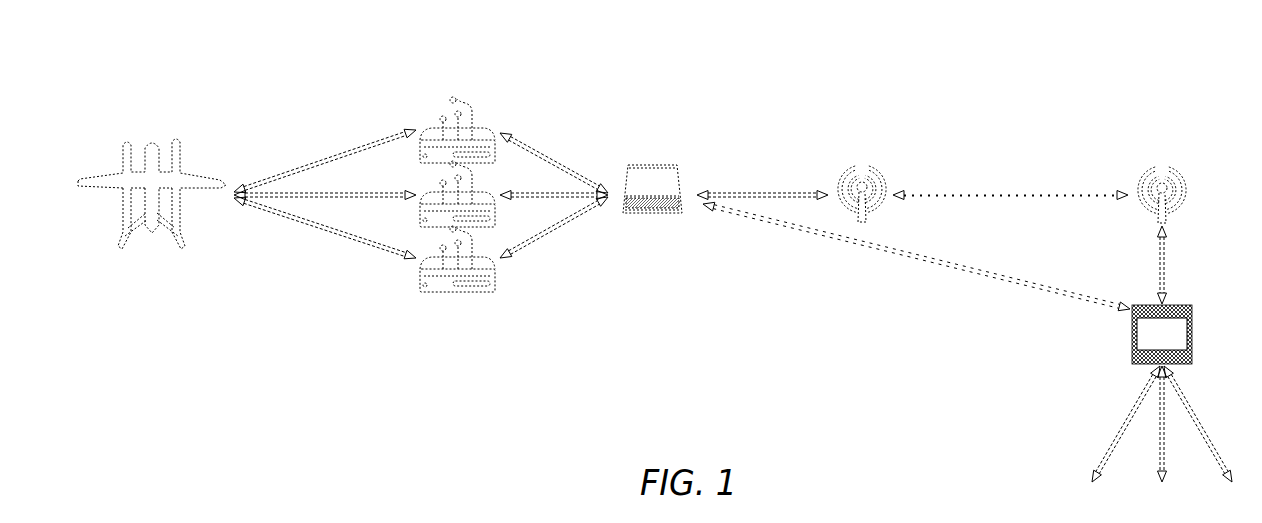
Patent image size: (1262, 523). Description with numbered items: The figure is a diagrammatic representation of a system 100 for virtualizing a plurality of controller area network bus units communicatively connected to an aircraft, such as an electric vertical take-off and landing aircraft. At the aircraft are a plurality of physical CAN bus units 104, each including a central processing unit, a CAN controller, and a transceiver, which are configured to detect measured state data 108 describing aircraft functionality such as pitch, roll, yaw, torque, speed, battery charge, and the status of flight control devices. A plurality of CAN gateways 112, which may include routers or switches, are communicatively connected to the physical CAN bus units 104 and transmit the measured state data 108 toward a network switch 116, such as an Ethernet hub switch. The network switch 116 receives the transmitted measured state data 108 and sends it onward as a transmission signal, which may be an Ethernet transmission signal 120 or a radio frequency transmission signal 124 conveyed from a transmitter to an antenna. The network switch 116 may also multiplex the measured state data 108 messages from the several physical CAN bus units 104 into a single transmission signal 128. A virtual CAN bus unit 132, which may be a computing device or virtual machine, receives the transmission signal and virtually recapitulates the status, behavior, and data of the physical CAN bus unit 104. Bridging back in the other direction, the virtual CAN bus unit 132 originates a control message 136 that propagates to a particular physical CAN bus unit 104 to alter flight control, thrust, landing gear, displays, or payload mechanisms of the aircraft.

The system 100 is at (358, 62).
The physical controller area network bus unit 104 is at (200, 162).
The measured state data 108 is at (322, 162).
The controller area network gateway 112 is at (475, 102).
The network switch 116 is at (651, 165).
The Ethernet transmission signal 120 is at (882, 208).
The radio frequency transmission signal 124 is at (1198, 184).
The single transmission signal 128 is at (745, 192).
The virtual controller area network bus unit 132 is at (1194, 325).
The control message 136 is at (945, 264).